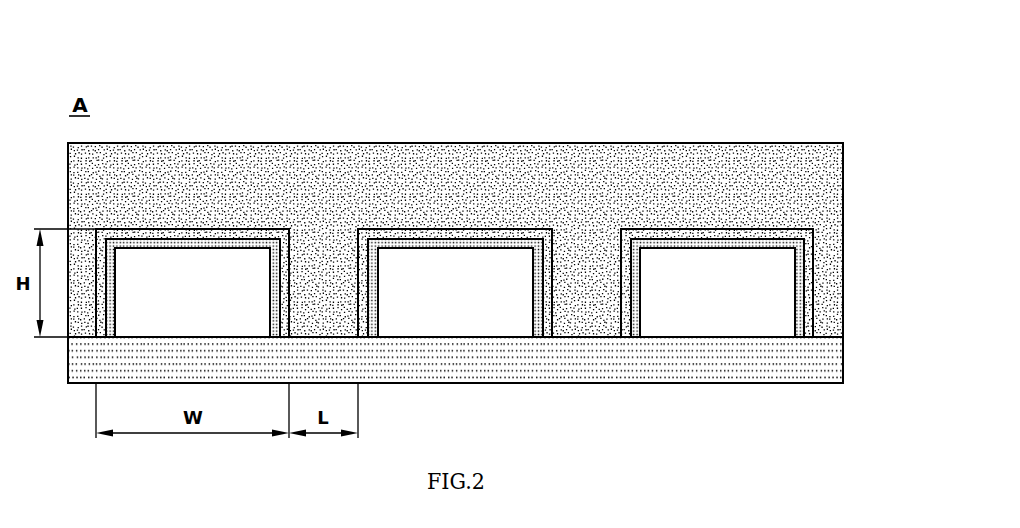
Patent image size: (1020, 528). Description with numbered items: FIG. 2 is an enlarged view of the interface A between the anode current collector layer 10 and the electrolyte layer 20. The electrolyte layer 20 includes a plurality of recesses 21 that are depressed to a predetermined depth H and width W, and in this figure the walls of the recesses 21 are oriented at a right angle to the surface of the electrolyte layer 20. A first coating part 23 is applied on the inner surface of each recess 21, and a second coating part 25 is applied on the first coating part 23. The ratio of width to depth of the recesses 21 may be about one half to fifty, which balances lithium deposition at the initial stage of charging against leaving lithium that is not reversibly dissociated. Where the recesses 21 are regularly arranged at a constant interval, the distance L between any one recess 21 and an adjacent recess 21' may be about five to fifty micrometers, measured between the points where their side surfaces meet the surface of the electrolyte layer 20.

The anode current collector layer 10 is at (843, 360).
The electrolyte layer 20 is at (558, 143).
The recess 21 is at (192, 217).
The adjacent recess 21' is at (455, 218).
The first coating part 23 is at (200, 239).
The second coating part 25 is at (253, 246).